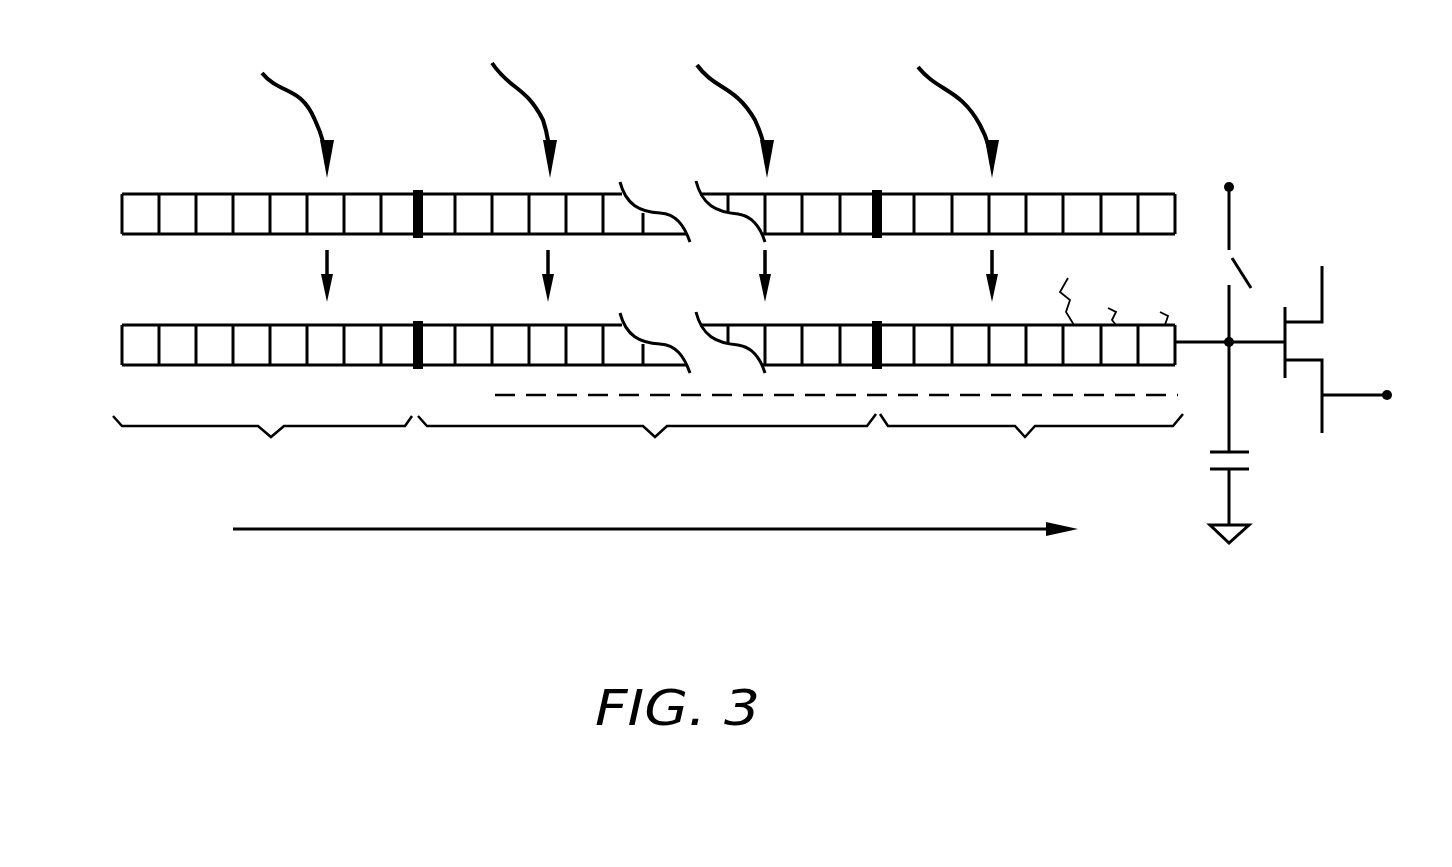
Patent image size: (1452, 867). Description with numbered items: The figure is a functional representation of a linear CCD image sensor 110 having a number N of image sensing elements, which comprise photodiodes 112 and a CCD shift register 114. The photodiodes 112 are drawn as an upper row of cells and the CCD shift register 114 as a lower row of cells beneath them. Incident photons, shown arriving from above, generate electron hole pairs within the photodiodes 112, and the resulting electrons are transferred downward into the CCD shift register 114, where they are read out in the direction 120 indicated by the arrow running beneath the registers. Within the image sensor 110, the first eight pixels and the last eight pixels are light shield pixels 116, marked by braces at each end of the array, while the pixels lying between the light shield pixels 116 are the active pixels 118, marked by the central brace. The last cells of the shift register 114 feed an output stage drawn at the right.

The linear CCD image sensor 110 is at (1106, 128).
The photodiodes 112 is at (179, 194).
The CCD shift register 114 is at (211, 325).
The light shield pixels 116 is at (272, 438).
The active pixels 118 is at (657, 437).
The direction 120 is at (662, 532).